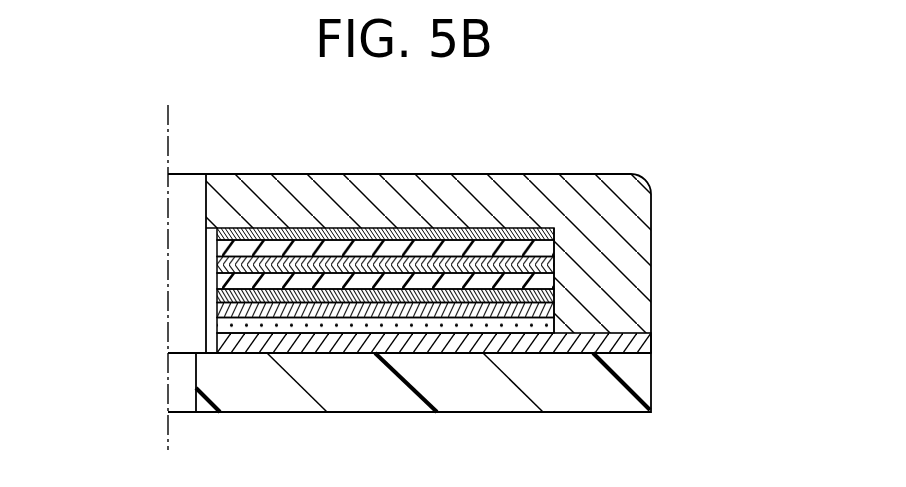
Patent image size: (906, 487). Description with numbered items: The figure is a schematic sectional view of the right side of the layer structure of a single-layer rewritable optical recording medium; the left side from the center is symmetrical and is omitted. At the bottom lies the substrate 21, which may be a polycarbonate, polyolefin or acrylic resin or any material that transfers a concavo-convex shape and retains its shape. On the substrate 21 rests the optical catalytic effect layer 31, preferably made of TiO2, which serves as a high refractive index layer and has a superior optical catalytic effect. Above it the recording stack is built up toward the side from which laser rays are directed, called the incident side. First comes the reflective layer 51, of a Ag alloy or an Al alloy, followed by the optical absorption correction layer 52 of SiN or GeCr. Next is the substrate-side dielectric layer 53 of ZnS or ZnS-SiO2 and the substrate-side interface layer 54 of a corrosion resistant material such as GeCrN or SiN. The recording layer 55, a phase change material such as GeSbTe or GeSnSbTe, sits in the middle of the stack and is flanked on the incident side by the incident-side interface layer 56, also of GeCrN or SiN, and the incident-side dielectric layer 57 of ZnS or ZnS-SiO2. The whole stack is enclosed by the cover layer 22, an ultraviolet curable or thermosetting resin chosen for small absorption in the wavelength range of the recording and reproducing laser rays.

The substrate 21 is at (463, 400).
The cover layer 22 is at (627, 190).
The optical catalytic effect layer 31 is at (637, 342).
The reflective layer 51 is at (217, 325).
The optical absorption correction layer 52 is at (552, 310).
The substrate-side dielectric layer 53 is at (217, 300).
The substrate-side interface layer 54 is at (550, 278).
The recording layer 55 is at (217, 266).
The incident-side interface layer 56 is at (548, 252).
The incident-side dielectric layer 57 is at (217, 236).